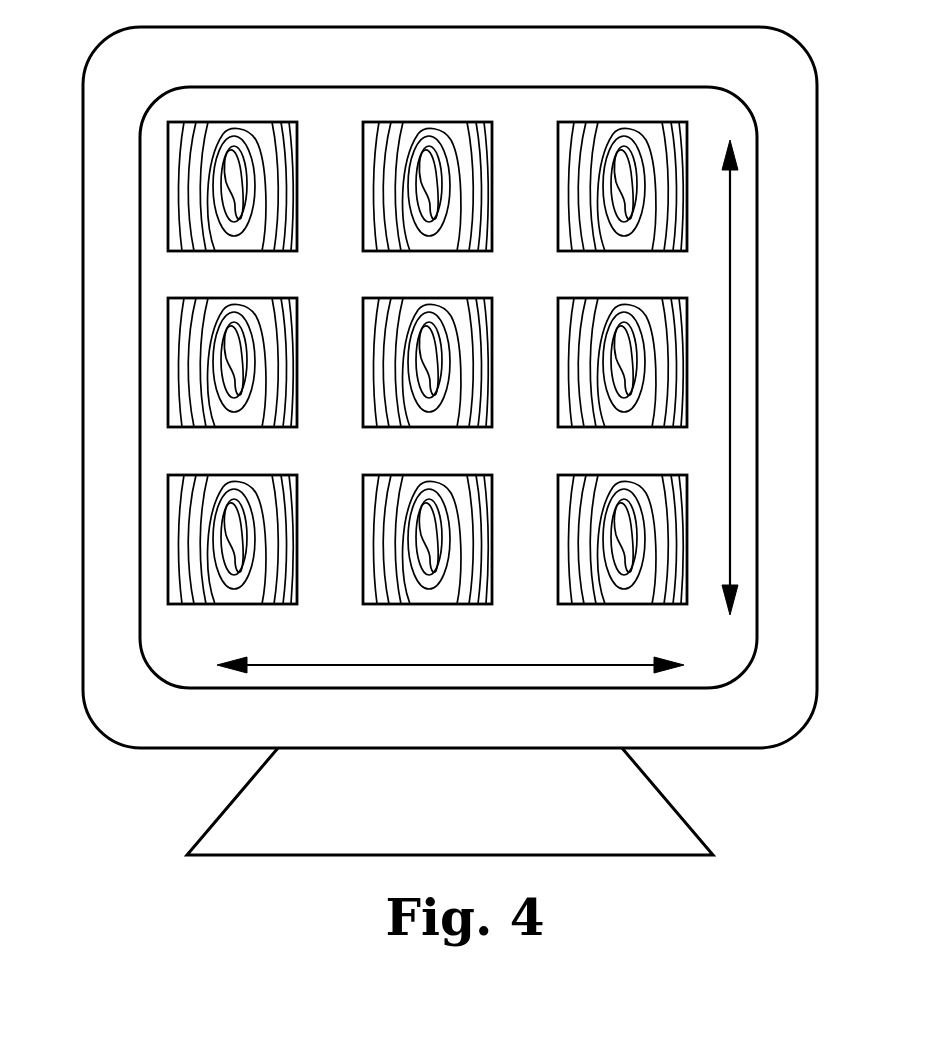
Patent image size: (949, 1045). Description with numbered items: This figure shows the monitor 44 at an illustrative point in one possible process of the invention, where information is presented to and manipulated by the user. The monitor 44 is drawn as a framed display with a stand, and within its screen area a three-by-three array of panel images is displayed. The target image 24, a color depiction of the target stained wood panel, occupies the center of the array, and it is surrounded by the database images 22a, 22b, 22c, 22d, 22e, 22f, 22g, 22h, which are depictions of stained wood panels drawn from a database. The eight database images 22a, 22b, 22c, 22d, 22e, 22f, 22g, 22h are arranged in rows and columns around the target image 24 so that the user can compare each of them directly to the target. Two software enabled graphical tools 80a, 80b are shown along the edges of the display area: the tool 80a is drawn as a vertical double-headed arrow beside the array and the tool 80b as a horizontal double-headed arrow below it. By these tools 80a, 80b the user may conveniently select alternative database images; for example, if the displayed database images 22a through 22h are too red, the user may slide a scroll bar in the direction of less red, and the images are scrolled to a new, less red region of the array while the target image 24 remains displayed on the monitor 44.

The database image 22a is at (233, 251).
The database image 22b is at (428, 251).
The database image 22c is at (623, 251).
The database image 22d is at (233, 427).
The database image 22e is at (623, 427).
The database image 22f is at (233, 604).
The database image 22g is at (428, 604).
The database image 22h is at (623, 604).
The target image 24 is at (428, 427).
The monitor 44 is at (817, 650).
The software enabled graphical tool 80a is at (730, 415).
The software enabled graphical tool 80b is at (594, 665).